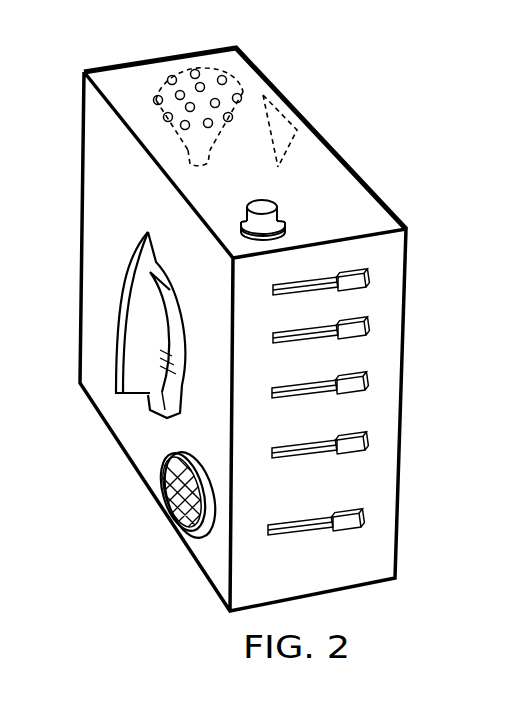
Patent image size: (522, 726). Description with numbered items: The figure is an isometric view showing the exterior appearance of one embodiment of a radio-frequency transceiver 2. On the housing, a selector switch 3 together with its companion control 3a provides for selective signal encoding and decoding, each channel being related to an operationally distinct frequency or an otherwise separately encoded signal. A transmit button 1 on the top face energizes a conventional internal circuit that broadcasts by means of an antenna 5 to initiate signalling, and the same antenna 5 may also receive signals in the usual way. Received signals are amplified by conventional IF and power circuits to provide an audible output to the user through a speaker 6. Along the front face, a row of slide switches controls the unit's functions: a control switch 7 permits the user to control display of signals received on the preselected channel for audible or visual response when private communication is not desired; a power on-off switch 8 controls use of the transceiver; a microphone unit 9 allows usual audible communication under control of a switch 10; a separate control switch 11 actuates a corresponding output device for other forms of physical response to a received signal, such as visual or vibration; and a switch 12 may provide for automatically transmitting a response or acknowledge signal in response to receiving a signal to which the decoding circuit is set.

The transmit button 1 is at (281, 212).
The radio-frequency transceiver 2 is at (332, 145).
The selector switch 3 is at (115, 355).
The selector control 3a is at (178, 352).
The antenna 5 is at (293, 103).
The speaker 6 is at (233, 77).
The control switch 7 is at (368, 383).
The power on-off switch 8 is at (364, 518).
The microphone unit 9 is at (170, 517).
The switch 10 is at (368, 445).
The control switch 11 is at (369, 331).
The switch 12 is at (369, 283).